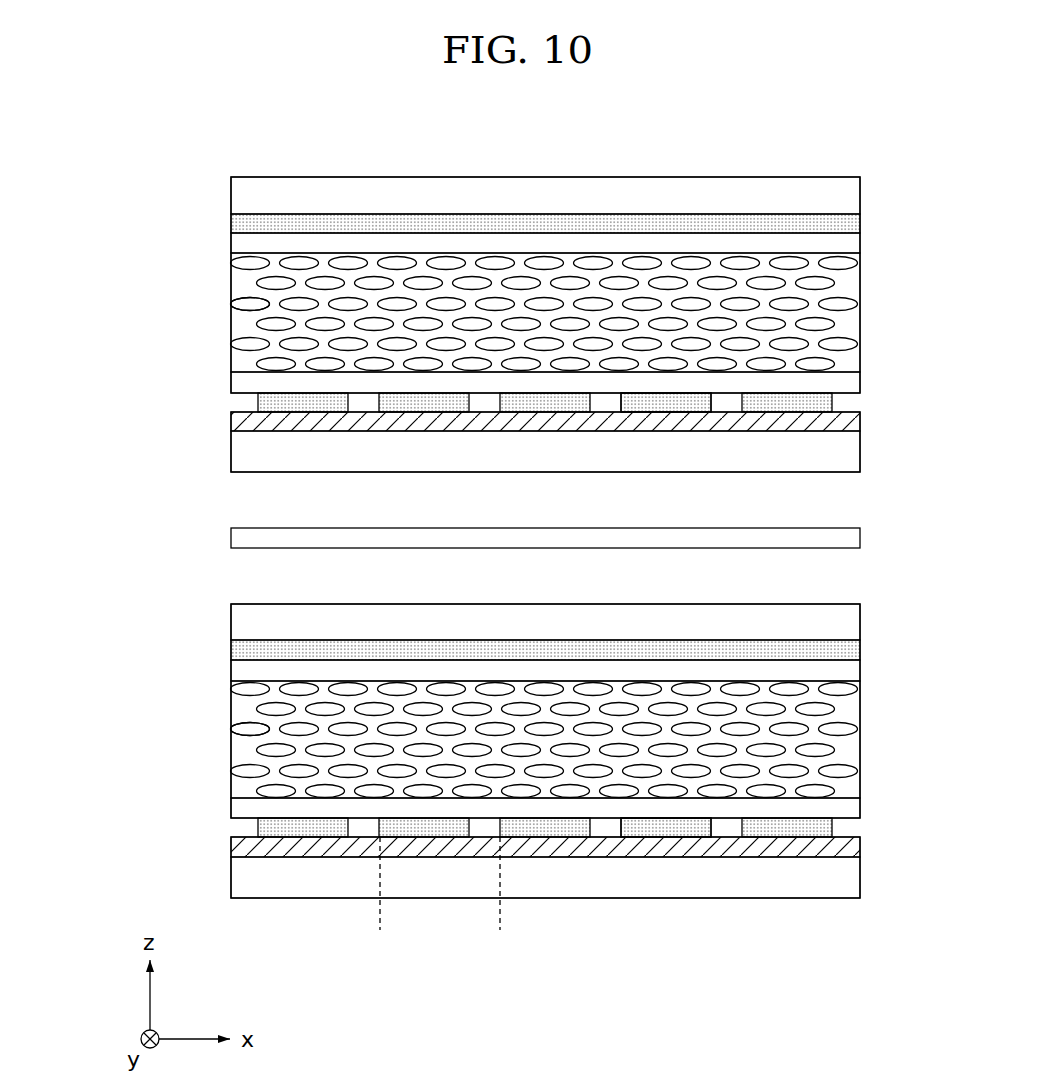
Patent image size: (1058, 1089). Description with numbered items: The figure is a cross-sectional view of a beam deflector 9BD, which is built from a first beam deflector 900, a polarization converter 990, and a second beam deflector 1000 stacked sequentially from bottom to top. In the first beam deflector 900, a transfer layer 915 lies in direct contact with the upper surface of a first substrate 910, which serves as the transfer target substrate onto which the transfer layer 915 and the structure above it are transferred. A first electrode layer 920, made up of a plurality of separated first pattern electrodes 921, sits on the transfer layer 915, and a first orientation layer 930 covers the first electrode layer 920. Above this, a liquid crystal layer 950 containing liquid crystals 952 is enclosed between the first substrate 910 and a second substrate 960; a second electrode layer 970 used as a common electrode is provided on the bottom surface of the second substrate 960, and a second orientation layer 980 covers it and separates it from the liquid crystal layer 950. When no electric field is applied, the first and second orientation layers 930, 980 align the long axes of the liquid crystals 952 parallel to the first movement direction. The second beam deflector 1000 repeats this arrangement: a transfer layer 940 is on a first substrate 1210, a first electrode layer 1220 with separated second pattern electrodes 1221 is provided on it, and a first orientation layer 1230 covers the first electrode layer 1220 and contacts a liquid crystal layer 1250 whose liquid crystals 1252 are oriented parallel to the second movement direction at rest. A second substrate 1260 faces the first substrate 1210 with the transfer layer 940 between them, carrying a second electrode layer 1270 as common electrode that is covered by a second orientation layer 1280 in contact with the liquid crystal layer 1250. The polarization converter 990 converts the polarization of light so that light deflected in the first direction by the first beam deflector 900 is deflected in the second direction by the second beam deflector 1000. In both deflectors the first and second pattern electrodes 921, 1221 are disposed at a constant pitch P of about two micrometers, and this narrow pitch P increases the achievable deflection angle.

The second beam deflector 1000 is at (213, 183).
The second substrate 1260 is at (852, 200).
The second electrode layer 1270 is at (852, 223).
The second orientation layer 1280 is at (852, 245).
The liquid crystal layer 1250 is at (874, 255).
The liquid crystals 1252 is at (245, 304).
The first orientation layer 1230 is at (236, 383).
The first electrode layer 1220 is at (842, 402).
The second pattern electrodes 1221 is at (660, 403).
The transfer layer 940 is at (234, 421).
The first substrate 1210 is at (852, 452).
The polarization converter 990 is at (233, 538).
The beam deflector 9BD is at (121, 183).
The first beam deflector 900 is at (213, 613).
The second substrate 960 is at (852, 625).
The second electrode layer 970 is at (852, 650).
The second orientation layer 980 is at (852, 670).
The liquid crystal layer 950 is at (874, 682).
The liquid crystals 952 is at (245, 730).
The first orientation layer 930 is at (236, 810).
The first electrode layer 920 is at (842, 828).
The first pattern electrodes 921 is at (665, 832).
The transfer layer 915 is at (786, 855).
The first substrate 910 is at (852, 877).
The pitch P is at (499, 926).